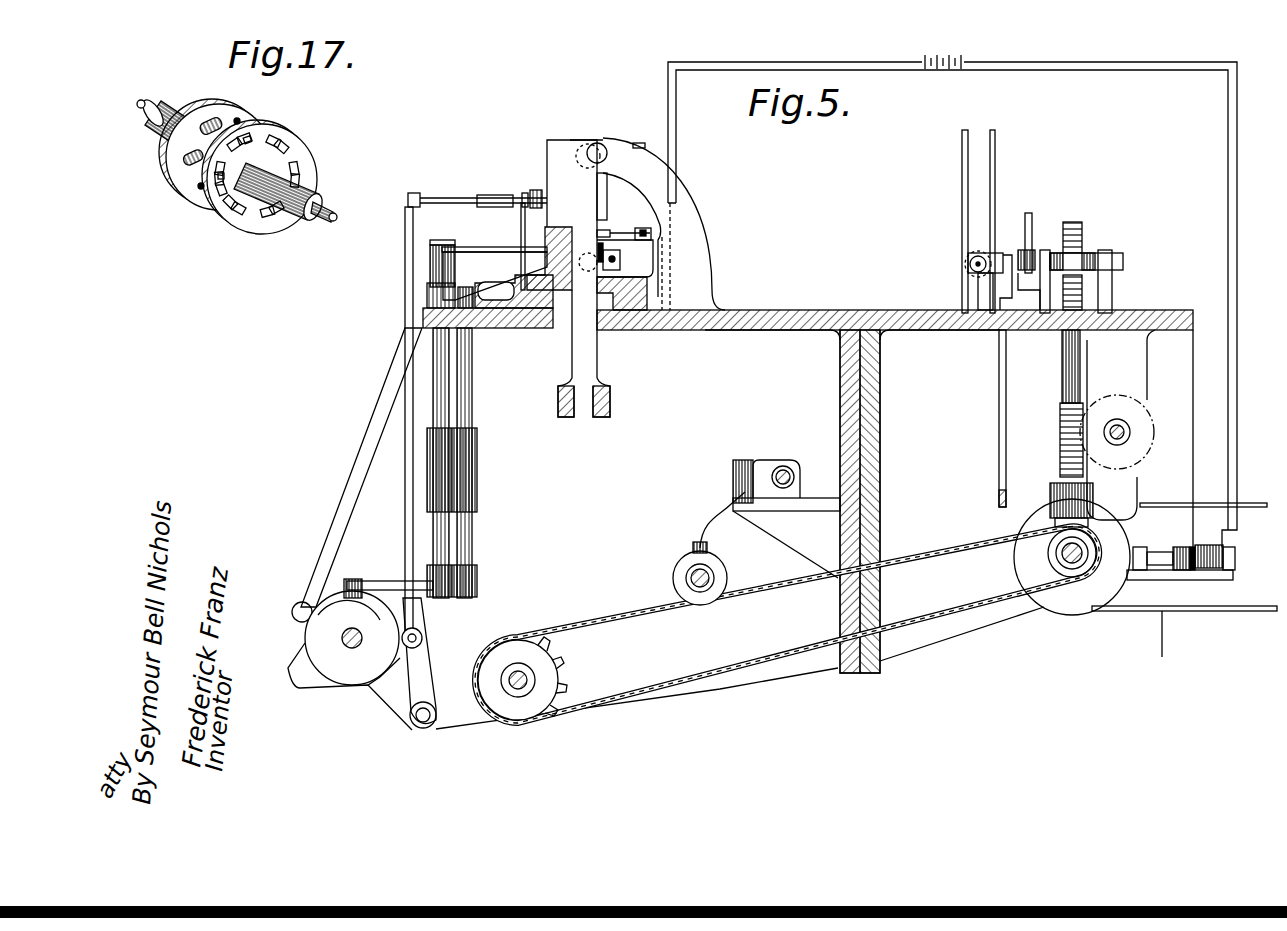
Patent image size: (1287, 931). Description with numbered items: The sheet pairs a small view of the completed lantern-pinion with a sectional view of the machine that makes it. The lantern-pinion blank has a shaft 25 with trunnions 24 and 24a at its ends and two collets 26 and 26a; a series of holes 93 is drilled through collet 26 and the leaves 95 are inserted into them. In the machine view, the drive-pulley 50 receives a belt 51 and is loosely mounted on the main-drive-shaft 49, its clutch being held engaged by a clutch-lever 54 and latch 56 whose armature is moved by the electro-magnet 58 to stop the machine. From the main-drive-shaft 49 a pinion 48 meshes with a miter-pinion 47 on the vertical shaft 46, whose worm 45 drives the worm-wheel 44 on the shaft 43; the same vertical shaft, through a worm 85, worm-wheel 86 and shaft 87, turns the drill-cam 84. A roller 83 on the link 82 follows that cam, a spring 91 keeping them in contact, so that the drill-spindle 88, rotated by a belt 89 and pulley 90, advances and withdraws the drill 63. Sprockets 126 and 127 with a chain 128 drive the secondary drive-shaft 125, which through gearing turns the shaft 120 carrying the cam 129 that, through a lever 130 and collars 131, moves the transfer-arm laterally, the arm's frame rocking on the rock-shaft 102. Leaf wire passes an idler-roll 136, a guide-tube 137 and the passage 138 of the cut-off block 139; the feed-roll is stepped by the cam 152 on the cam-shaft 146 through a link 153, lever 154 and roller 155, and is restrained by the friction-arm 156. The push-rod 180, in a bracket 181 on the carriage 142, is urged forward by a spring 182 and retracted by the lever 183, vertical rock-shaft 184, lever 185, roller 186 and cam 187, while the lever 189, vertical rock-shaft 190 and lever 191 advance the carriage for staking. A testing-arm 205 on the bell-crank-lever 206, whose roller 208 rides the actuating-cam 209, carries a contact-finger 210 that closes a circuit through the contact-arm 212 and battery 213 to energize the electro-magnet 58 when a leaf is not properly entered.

In FIG. 17, the trunnion 24 is at (323, 210).
In FIG. 17, the trunnion 24a is at (138, 108).
In FIG. 17, the shaft 25 is at (307, 187).
In FIG. 17, the collet 26 is at (245, 207).
In FIG. 17, the collet 26a is at (172, 175).
In FIG. 17, the holes 93 is at (283, 142).
In FIG. 17, the leaves 95 is at (214, 126).
In FIG. 5, the shaft 43 is at (1125, 430).
In FIG. 5, the worm-wheel 44 is at (1133, 408).
In FIG. 5, the worm 45 is at (1063, 445).
In FIG. 5, the vertical shaft 46 is at (1068, 372).
In FIG. 5, the miter-pinion 47 is at (1050, 512).
In FIG. 5, the pinion 48 is at (1080, 580).
In FIG. 5, the main-drive-shaft 49 is at (1068, 566).
In FIG. 5, the drive-pulley 50 is at (1108, 598).
In FIG. 5, the belt 51 is at (1184, 639).
In FIG. 5, the clutch-lever 54 is at (1157, 553).
In FIG. 5, the latch 56 is at (1192, 566).
In FIG. 5, the electro-magnet 58 is at (1222, 549).
In FIG. 5, the drill 63 is at (967, 268).
In FIG. 5, the link 82 is at (1000, 445).
In FIG. 5, the roller 83 is at (1035, 250).
In FIG. 5, the drill-cam 84 is at (1028, 213).
In FIG. 5, the worm 85 is at (1085, 240).
In FIG. 5, the worm-wheel 86 is at (1077, 223).
In FIG. 5, the shaft 87 is at (1122, 257).
In FIG. 5, the drill-spindle 88 is at (970, 260).
In FIG. 5, the belt 89 is at (960, 175).
In FIG. 5, the pulley 90 is at (980, 250).
In FIG. 5, the spring 91 is at (1012, 270).
In FIG. 5, the rock-shaft 102 is at (794, 480).
In FIG. 5, the shaft 120 is at (687, 572).
In FIG. 5, the secondary drive-shaft 125 is at (517, 697).
In FIG. 5, the sprocket 126 is at (552, 678).
In FIG. 5, the sprocket 127 is at (1020, 577).
In FIG. 5, the chain 128 is at (790, 592).
In FIG. 5, the cam 129 is at (688, 558).
In FIG. 5, the lever 130 is at (720, 535).
In FIG. 5, the collars 131 is at (792, 468).
In FIG. 5, the idler-roll 136 is at (645, 147).
In FIG. 5, the guide-tube 137 is at (578, 150).
In FIG. 5, the passage 138 is at (590, 147).
In FIG. 5, the cut-off block 139 is at (555, 152).
In FIG. 5, the carriage 142 is at (622, 288).
In FIG. 5, the cam-shaft 146 is at (350, 646).
In FIG. 5, the cam 152 is at (382, 680).
In FIG. 5, the link 153 is at (455, 197).
In FIG. 5, the lever 154 is at (415, 265).
In FIG. 5, the roller 155 is at (422, 638).
In FIG. 5, the friction-arm 156 is at (607, 210).
In FIG. 5, the push-rod 180 is at (585, 270).
In FIG. 5, the bracket 181 is at (603, 251).
In FIG. 5, the spring 182 is at (623, 266).
In FIG. 5, the lever 183 is at (427, 277).
In FIG. 5, the vertical rock-shaft 184 is at (440, 398).
In FIG. 5, the lever 185 is at (380, 585).
In FIG. 5, the roller 186 is at (340, 592).
In FIG. 5, the cam 187 is at (322, 623).
In FIG. 5, the lever 189 is at (508, 282).
In FIG. 5, the vertical rock-shaft 190 is at (465, 538).
In FIG. 5, the lever 191 is at (475, 580).
In FIG. 5, the testing-arm 205 is at (605, 250).
In FIG. 5, the bell-crank-lever 206 is at (393, 377).
In FIG. 5, the roller 208 is at (292, 611).
In FIG. 5, the actuating-cam 209 is at (307, 680).
In FIG. 5, the contact-finger 210 is at (615, 240).
In FIG. 5, the contact-arm 212 is at (633, 233).
In FIG. 5, the battery 213 is at (962, 64).